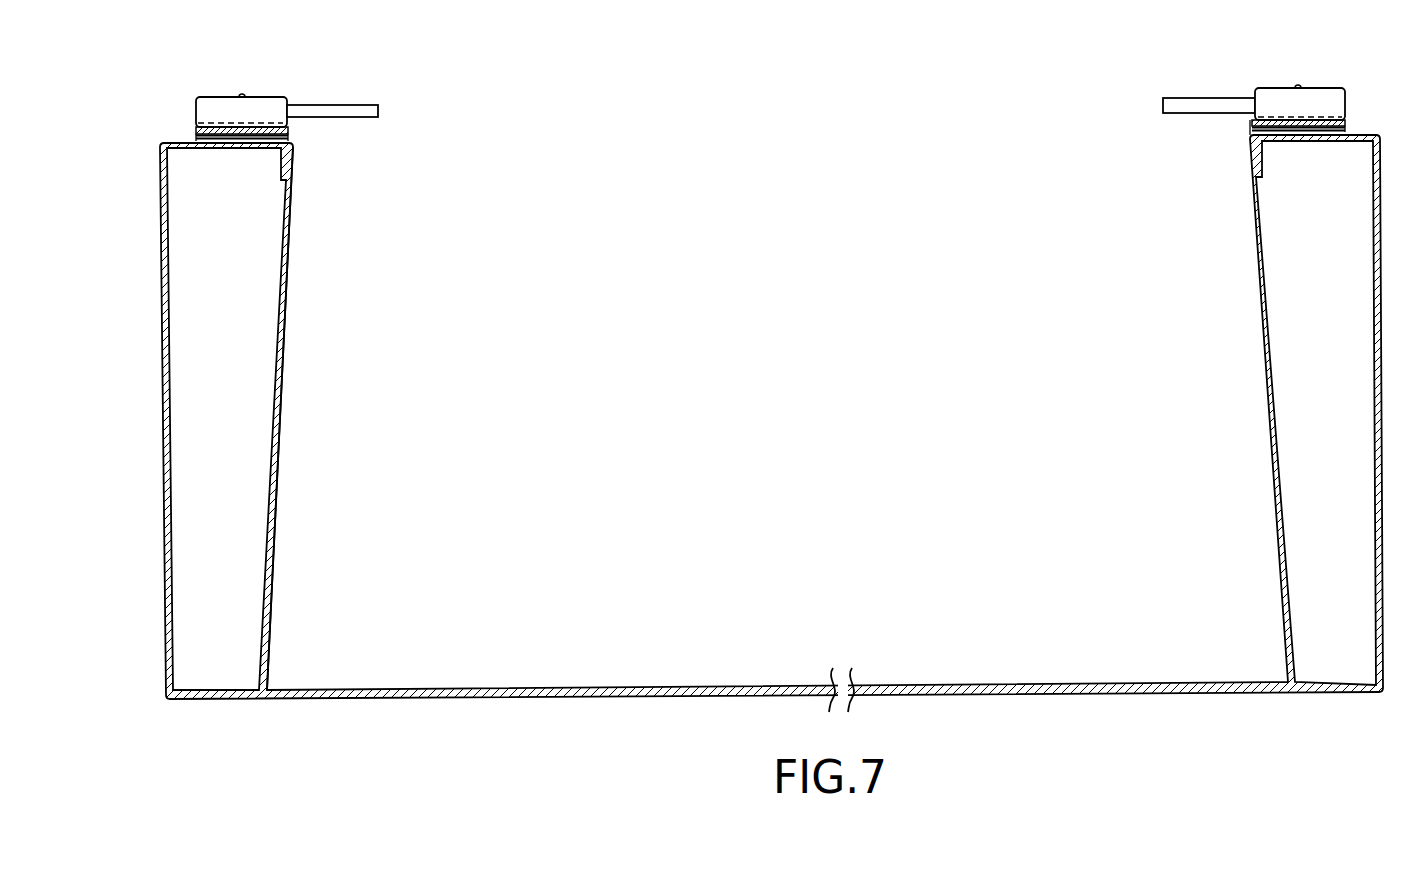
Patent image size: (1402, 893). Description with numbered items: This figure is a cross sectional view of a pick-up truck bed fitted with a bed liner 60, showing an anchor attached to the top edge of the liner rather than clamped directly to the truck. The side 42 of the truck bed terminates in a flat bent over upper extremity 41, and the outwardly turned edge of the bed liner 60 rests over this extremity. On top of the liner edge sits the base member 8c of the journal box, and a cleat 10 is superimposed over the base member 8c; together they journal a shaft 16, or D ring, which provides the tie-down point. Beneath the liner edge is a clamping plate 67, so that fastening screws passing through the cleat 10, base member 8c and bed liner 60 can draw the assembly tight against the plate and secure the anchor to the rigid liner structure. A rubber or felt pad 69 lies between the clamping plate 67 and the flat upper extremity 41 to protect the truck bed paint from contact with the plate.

The base member 8c is at (220, 123).
The cleat 10 is at (278, 112).
The shaft 16 is at (367, 105).
The flat bent over upper extremity 41 is at (180, 142).
The side 42 is at (160, 173).
The bed liner 60 is at (292, 139).
The clamping plate 67 is at (258, 138).
The rubber or felt pad 69 is at (233, 142).